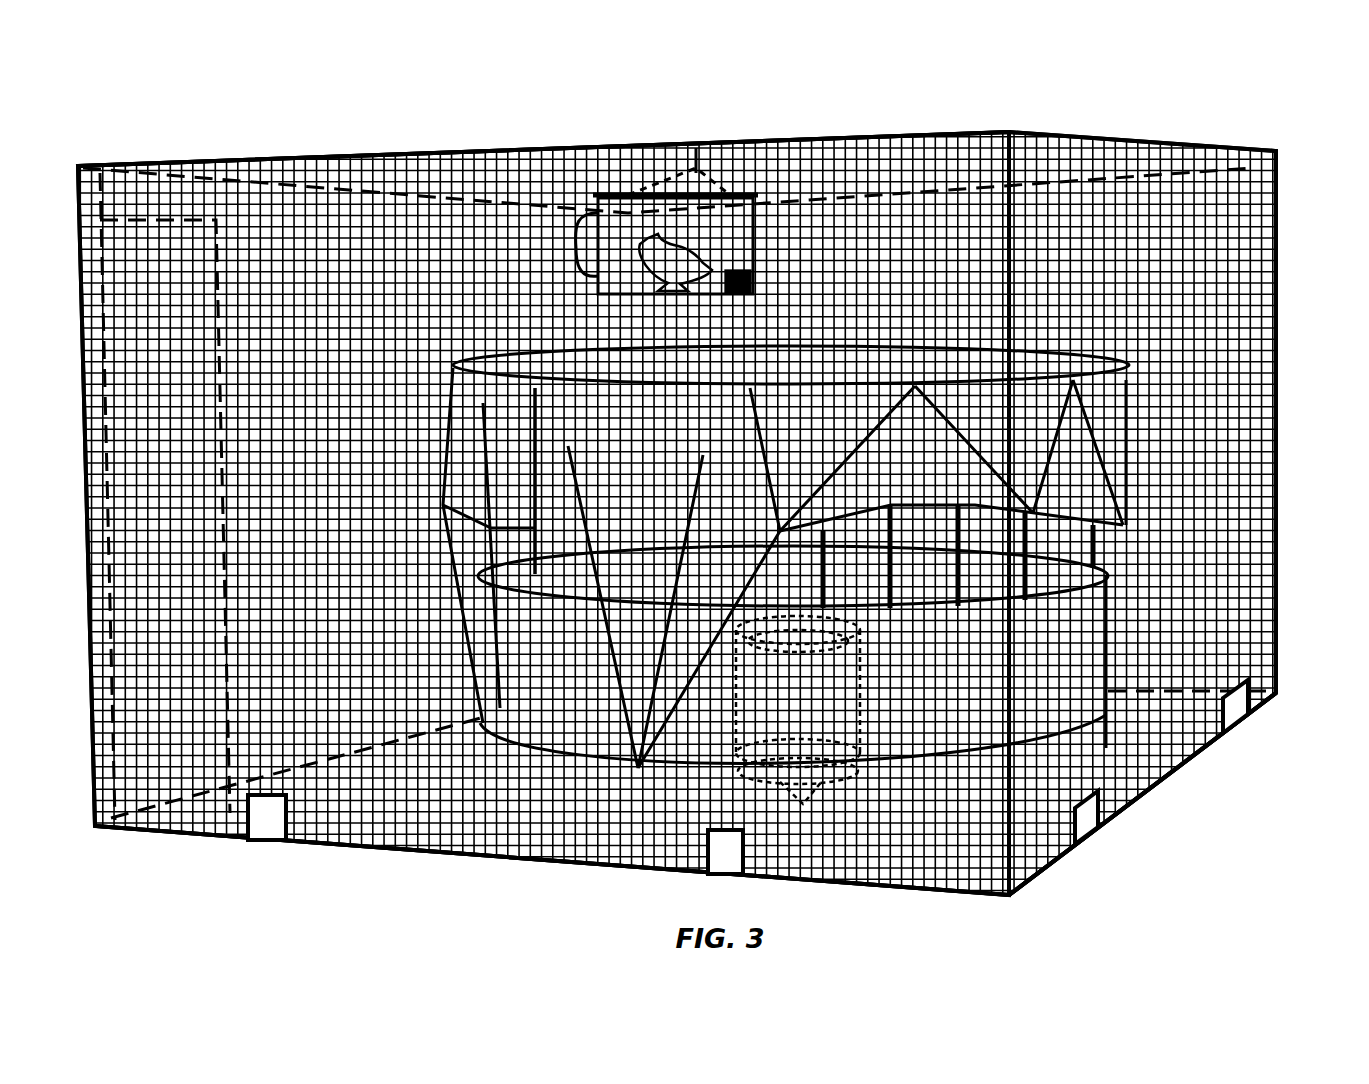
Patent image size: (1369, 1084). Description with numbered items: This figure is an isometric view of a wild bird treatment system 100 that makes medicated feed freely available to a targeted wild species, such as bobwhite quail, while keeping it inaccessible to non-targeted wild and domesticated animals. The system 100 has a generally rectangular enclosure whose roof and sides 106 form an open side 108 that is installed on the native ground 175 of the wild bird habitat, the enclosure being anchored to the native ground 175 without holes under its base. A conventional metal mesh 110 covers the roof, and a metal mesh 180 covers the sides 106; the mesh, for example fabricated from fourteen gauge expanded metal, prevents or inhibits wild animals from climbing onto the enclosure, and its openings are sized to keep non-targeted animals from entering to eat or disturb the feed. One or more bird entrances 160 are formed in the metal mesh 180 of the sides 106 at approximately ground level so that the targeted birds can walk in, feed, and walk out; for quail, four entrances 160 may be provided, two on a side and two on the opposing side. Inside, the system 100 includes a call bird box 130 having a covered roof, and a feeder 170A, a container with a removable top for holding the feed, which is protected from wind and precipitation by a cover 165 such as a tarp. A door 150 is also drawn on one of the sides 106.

The wild bird treatment system 100 is at (1232, 97).
The sides 106 is at (675, 515).
The open side 108 is at (816, 898).
The metal mesh 110 is at (376, 140).
The call bird box 130 is at (743, 190).
The door 150 is at (165, 496).
The bird entrances 160 is at (705, 868).
The cover 165 is at (913, 337).
The feeder 170A is at (798, 710).
The native ground 175 is at (1040, 860).
The metal mesh 180 is at (1216, 282).